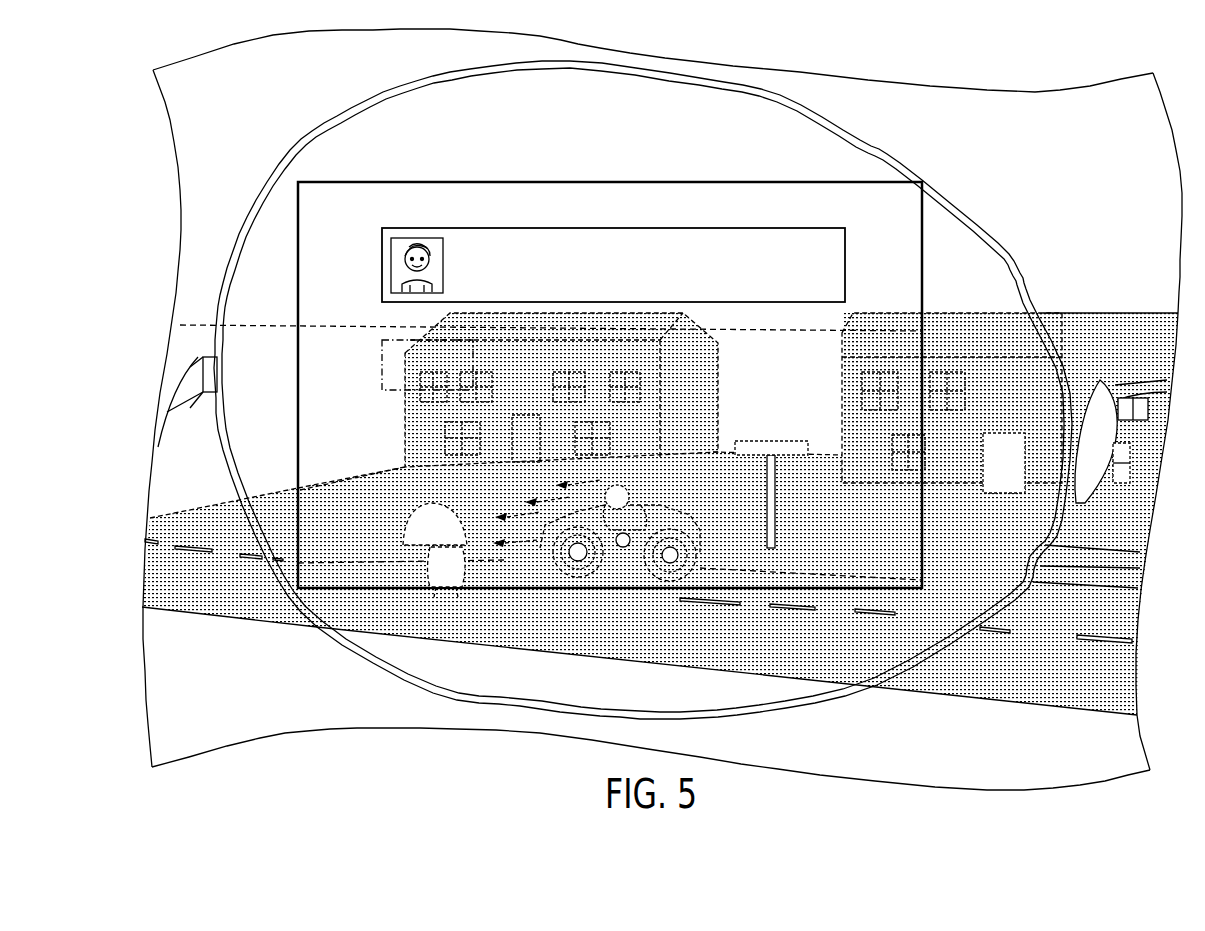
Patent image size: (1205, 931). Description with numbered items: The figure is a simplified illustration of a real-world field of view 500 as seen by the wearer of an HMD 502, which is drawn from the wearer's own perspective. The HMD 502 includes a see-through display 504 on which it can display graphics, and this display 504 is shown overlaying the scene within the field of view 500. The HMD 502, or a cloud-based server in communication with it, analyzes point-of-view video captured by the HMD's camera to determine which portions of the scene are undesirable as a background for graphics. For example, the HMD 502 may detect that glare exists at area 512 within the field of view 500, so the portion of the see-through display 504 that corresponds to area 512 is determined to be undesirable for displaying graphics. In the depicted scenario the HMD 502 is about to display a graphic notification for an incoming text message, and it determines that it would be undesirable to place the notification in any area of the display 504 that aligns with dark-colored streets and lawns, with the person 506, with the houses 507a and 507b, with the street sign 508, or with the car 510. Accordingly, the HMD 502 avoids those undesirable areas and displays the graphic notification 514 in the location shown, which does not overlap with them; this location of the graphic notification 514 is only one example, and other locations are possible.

The real-world field of view 500 is at (985, 168).
The HMD 502 is at (1000, 243).
The see-through display 504 is at (548, 205).
The person 506 is at (386, 478).
The house 507a is at (705, 382).
The house 507b is at (843, 420).
The street sign 508 is at (762, 440).
The car 510 is at (617, 555).
The area 512 is at (382, 365).
The graphic notification 514 is at (690, 247).